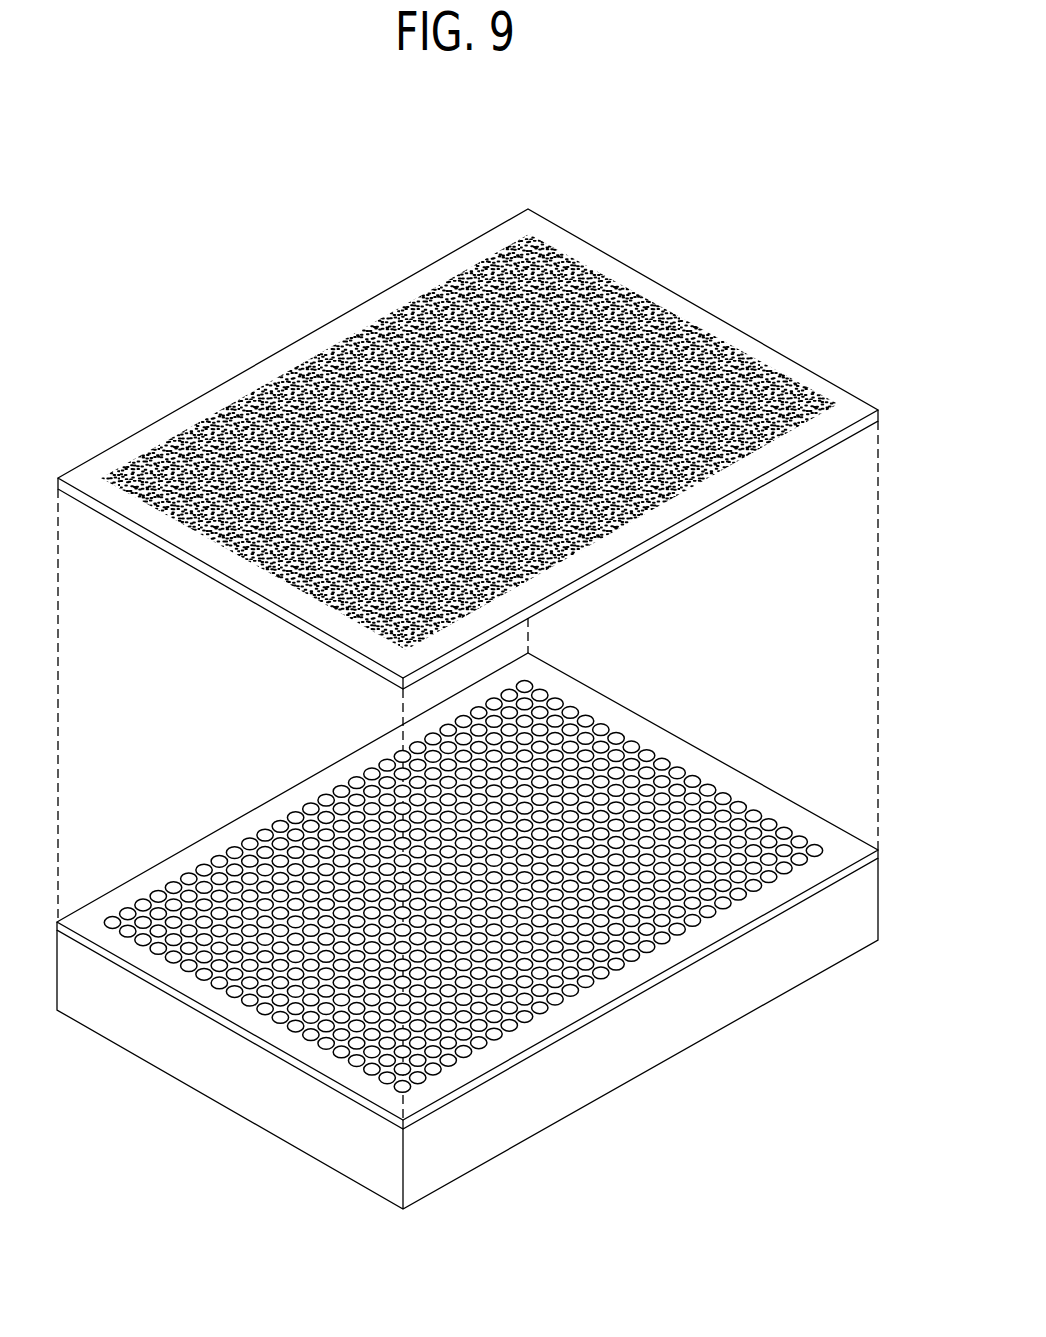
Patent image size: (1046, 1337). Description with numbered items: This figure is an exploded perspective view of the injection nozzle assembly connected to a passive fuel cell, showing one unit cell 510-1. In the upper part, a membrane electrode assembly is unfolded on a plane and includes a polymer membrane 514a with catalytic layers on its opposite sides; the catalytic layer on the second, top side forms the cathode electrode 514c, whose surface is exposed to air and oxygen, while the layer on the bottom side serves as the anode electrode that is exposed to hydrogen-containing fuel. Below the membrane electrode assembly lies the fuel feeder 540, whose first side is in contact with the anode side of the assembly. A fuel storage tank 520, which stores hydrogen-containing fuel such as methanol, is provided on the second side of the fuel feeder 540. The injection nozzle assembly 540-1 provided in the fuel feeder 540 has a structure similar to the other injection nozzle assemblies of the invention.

The unit cell 510-1 is at (468, 400).
The polymer membrane 514a is at (322, 327).
The cathode electrode 514c is at (277, 393).
The fuel storage tank 520 is at (590, 1073).
The fuel feeder 540 is at (173, 865).
The injection nozzle assembly 540-1 is at (312, 808).